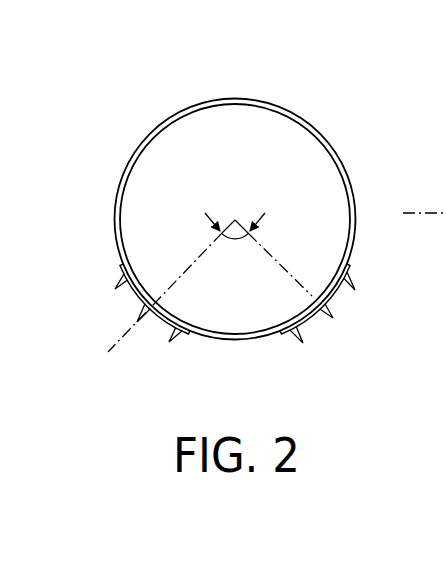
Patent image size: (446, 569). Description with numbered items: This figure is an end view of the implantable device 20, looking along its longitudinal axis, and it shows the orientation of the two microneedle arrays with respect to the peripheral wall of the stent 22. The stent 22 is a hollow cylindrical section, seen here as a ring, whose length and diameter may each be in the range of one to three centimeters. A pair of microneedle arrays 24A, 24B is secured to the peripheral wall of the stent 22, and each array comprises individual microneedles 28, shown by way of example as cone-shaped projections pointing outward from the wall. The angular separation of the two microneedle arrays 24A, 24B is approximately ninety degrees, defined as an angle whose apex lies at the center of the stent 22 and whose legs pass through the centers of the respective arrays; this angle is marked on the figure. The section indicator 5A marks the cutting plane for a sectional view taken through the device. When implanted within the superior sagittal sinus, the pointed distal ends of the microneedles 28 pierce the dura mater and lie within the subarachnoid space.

The implantable device 20 is at (192, 87).
The hollow cylindrical section 22 is at (300, 118).
The microneedle array 24A is at (119, 318).
The microneedle array 24B is at (346, 308).
The microneedles 28 is at (118, 286).
The section line 5A is at (185, 265).